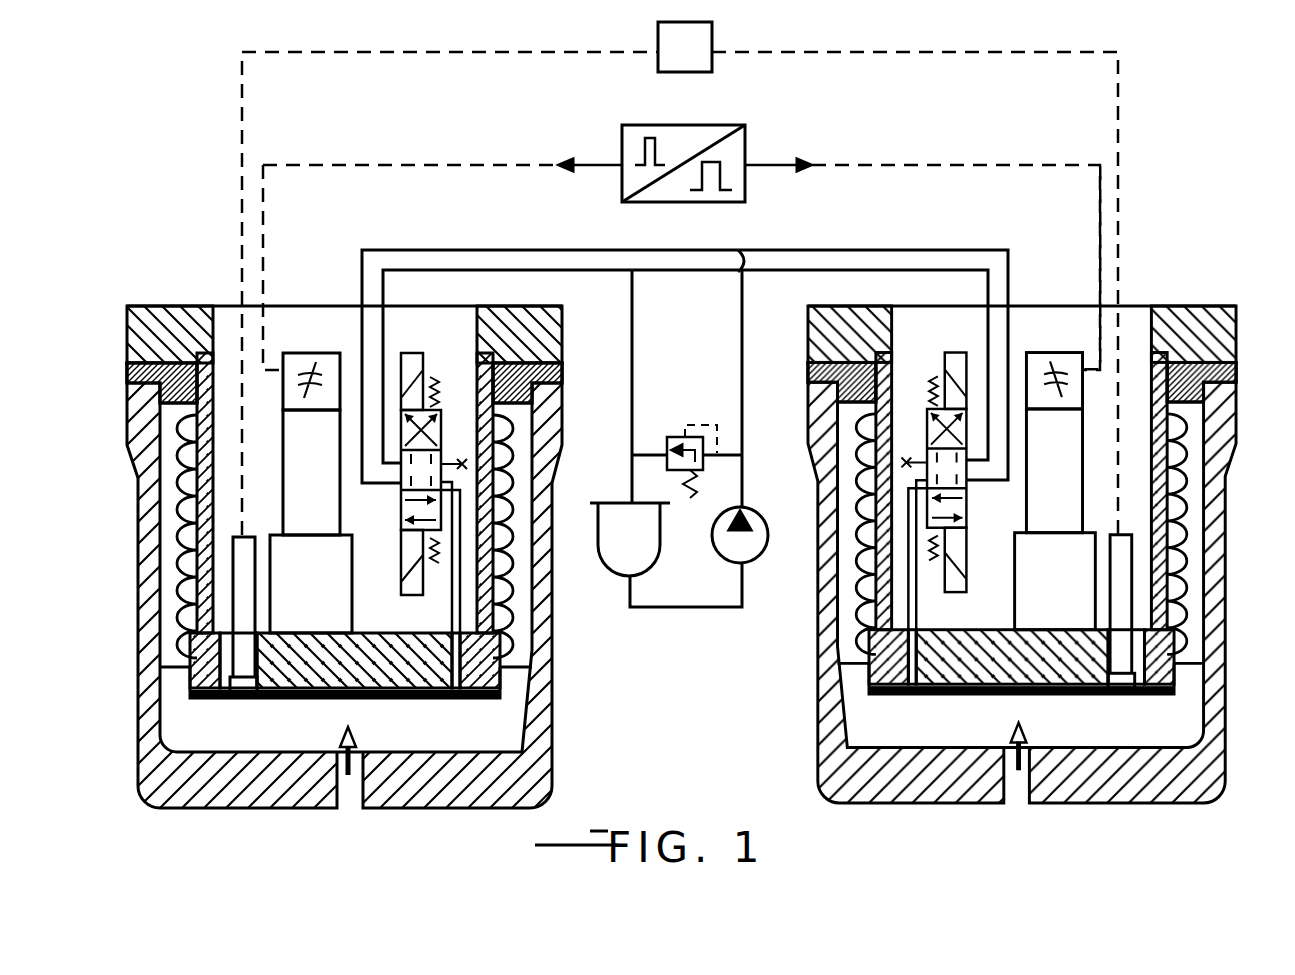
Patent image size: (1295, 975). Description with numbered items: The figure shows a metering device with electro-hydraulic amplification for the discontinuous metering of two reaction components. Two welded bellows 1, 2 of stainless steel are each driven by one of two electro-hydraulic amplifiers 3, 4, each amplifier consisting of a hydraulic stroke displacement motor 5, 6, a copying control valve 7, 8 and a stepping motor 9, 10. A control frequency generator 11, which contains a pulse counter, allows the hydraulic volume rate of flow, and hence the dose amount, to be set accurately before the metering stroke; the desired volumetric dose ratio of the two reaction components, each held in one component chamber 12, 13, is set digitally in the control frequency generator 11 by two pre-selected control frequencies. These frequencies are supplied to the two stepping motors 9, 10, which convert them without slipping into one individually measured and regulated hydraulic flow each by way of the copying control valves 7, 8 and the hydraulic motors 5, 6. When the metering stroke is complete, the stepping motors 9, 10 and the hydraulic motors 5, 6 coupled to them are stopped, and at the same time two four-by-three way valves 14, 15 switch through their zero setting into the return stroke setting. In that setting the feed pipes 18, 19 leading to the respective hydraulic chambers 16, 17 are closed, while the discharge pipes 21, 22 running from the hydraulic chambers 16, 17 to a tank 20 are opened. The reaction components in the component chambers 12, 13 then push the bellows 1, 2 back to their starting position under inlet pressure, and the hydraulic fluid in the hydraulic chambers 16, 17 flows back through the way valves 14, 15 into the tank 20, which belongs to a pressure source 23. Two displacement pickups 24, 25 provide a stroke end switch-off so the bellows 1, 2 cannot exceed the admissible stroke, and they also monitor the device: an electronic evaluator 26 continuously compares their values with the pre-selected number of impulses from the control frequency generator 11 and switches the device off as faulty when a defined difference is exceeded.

The welded bellows 1 is at (193, 663).
The welded bellows 2 is at (1170, 653).
The electro-hydraulic amplifier 3 is at (306, 354).
The electro-hydraulic amplifier 4 is at (1055, 350).
The hydraulic stroke displacement motor 5 is at (323, 602).
The hydraulic stroke displacement motor 6 is at (1068, 599).
The copying control valve 7 is at (283, 448).
The copying control valve 8 is at (1060, 453).
The stepping motor 9 is at (283, 373).
The stepping motor 10 is at (1065, 391).
The control frequency generator 11 is at (700, 125).
The component chamber 12 is at (196, 734).
The component chamber 13 is at (1163, 722).
The 4/3 way valve 14 is at (402, 470).
The 4/3 way valve 15 is at (971, 470).
The hydraulic chamber 16 is at (440, 690).
The hydraulic chamber 17 is at (910, 697).
The feed pipe 18 is at (425, 250).
The feed pipe 19 is at (992, 250).
The tank 20 is at (628, 553).
The discharge pipe 21 is at (505, 252).
The discharge pipe 22 is at (848, 270).
The pressure source 23 is at (757, 563).
The displacement pickup 24 is at (230, 604).
The displacement pickup 25 is at (1133, 583).
The electronic evaluator 26 is at (712, 30).